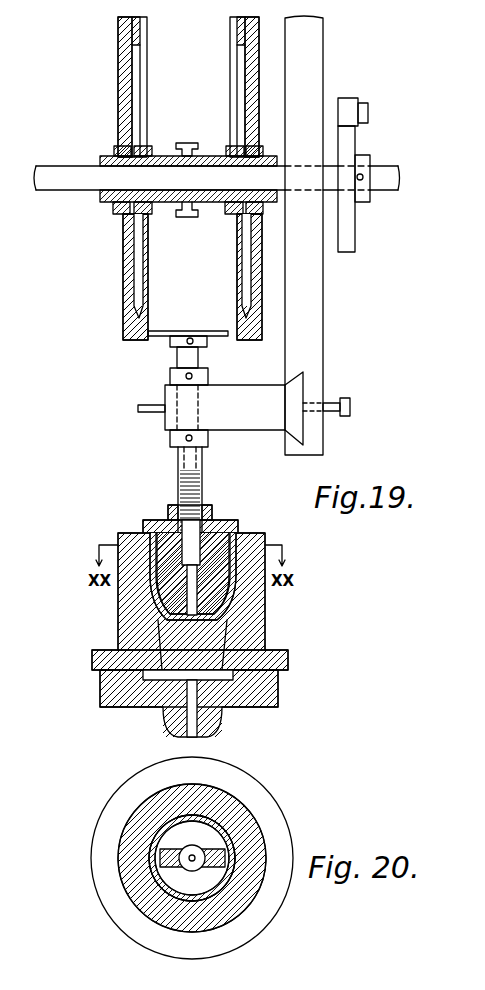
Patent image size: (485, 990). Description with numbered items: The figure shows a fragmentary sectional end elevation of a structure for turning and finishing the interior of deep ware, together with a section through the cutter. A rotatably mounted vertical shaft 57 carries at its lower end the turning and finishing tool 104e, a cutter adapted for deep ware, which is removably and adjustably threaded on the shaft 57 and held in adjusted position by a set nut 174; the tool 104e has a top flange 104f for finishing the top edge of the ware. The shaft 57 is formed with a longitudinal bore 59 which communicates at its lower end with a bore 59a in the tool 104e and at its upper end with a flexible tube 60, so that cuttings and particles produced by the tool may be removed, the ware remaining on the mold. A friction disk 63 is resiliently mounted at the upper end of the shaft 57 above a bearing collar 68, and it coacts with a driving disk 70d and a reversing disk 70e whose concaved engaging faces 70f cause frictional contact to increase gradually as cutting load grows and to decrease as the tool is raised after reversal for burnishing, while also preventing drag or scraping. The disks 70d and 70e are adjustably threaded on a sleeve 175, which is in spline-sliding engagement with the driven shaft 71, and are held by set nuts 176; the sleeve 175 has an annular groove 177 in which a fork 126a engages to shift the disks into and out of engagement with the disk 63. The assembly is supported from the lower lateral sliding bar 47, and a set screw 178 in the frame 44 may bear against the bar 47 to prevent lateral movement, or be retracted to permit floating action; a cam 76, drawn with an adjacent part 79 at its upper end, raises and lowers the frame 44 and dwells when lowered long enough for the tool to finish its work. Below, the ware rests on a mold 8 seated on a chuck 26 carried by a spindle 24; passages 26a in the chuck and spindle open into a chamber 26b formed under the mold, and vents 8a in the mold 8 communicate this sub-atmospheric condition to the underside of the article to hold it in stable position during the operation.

In FIG. 19, the shaft 71 is at (55, 167).
In FIG. 19, the sleeve 175 is at (103, 204).
In FIG. 19, the set nuts 176 is at (256, 150).
In FIG. 19, the annular groove 177 is at (177, 211).
In FIG. 19, the fork 126a is at (190, 216).
In FIG. 19, the driving disk 70d is at (128, 291).
In FIG. 19, the reversing disk 70e is at (258, 283).
In FIG. 19, the concaved engaging faces 70f is at (244, 298).
In FIG. 19, the friction gear 63 is at (207, 336).
In FIG. 19, the shaft 57 is at (177, 358).
In FIG. 20, the shaft 57 is at (200, 852).
In FIG. 19, the bearing collar 68 is at (170, 375).
In FIG. 19, the flexible tube 60 is at (158, 413).
In FIG. 19, the lower lateral sliding bar 47 is at (303, 428).
In FIG. 19, the frame 44 is at (323, 367).
In FIG. 19, the set screw 178 is at (344, 404).
In FIG. 19, the bracket head 79 is at (348, 98).
In FIG. 19, the cam 76 is at (351, 236).
In FIG. 19, the longitudinal bore 59 is at (178, 487).
In FIG. 19, the set nut 174 is at (208, 516).
In FIG. 19, the top flange 104f is at (238, 526).
In FIG. 19, the mold 8 is at (264, 622).
In FIG. 20, the mold 8 is at (262, 832).
In FIG. 19, the cavity B is at (148, 580).
In FIG. 20, the cavity B is at (160, 882).
In FIG. 19, the turning and finishing tool 104e is at (170, 595).
In FIG. 20, the turning and finishing tool 104e is at (156, 859).
In FIG. 19, the bore 59a is at (200, 590).
In FIG. 19, the vents 8a is at (222, 646).
In FIG. 19, the chuck 26 is at (278, 694).
In FIG. 19, the passages 26a is at (198, 722).
In FIG. 19, the chamber 26b is at (210, 678).
In FIG. 19, the spindle 24 is at (165, 724).